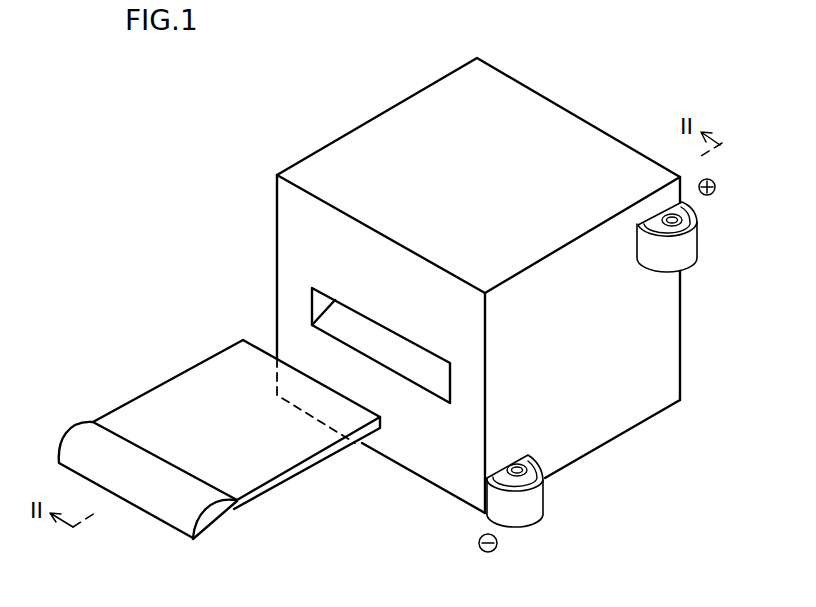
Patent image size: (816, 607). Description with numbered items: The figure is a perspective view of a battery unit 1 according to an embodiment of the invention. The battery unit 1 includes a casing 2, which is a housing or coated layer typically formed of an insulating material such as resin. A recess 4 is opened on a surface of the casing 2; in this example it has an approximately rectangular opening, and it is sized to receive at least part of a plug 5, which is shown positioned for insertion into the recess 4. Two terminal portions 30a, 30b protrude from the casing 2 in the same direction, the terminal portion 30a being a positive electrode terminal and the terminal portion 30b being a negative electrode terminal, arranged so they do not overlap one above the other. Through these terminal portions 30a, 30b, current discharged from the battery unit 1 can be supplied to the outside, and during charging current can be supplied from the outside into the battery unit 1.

The battery unit 1 is at (596, 77).
The casing 2 is at (373, 140).
The recess 4 is at (342, 323).
The plug 5 is at (163, 408).
The terminal portion 30a is at (682, 212).
The terminal portion 30b is at (530, 458).